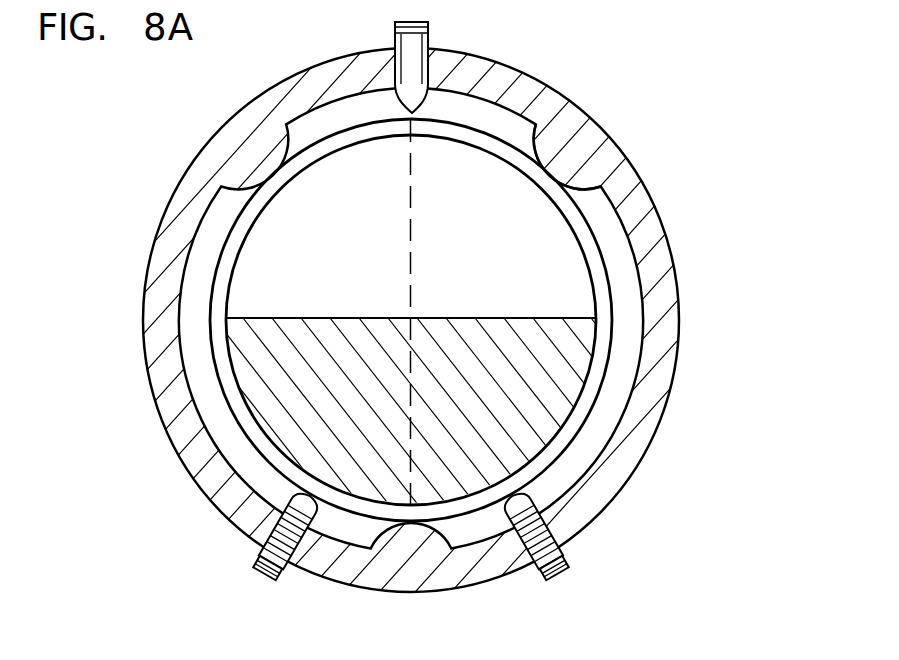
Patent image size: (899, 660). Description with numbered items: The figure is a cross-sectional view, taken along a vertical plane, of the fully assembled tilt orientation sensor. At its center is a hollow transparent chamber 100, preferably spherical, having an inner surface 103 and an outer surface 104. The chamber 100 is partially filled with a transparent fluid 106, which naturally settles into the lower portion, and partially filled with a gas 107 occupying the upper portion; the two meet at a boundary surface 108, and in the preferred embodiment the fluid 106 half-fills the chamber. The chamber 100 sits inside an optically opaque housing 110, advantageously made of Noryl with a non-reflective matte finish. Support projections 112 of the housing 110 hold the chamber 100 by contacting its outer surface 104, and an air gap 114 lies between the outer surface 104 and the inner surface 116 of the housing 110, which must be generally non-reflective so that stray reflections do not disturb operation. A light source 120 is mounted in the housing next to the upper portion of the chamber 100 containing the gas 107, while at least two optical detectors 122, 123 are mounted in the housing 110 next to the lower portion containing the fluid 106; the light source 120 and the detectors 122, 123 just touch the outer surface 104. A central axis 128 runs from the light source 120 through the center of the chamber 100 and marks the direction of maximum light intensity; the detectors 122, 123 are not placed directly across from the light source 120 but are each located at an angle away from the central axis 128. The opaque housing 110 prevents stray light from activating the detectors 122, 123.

The hollow transparent chamber 100 is at (243, 225).
The inner surface 103 is at (584, 260).
The outer surface 104 is at (597, 405).
The transparent fluid 106 is at (356, 380).
The gas 107 is at (359, 204).
The boundary surface 108 is at (302, 318).
The optically opaque housing 110 is at (664, 325).
The support projections 112 is at (567, 160).
The air gap 114 is at (630, 371).
The inner surface of housing 116 is at (516, 145).
The light source 120 is at (431, 27).
The optical detector 122 is at (267, 577).
The optical detector 123 is at (555, 578).
The central axis 128 is at (414, 268).